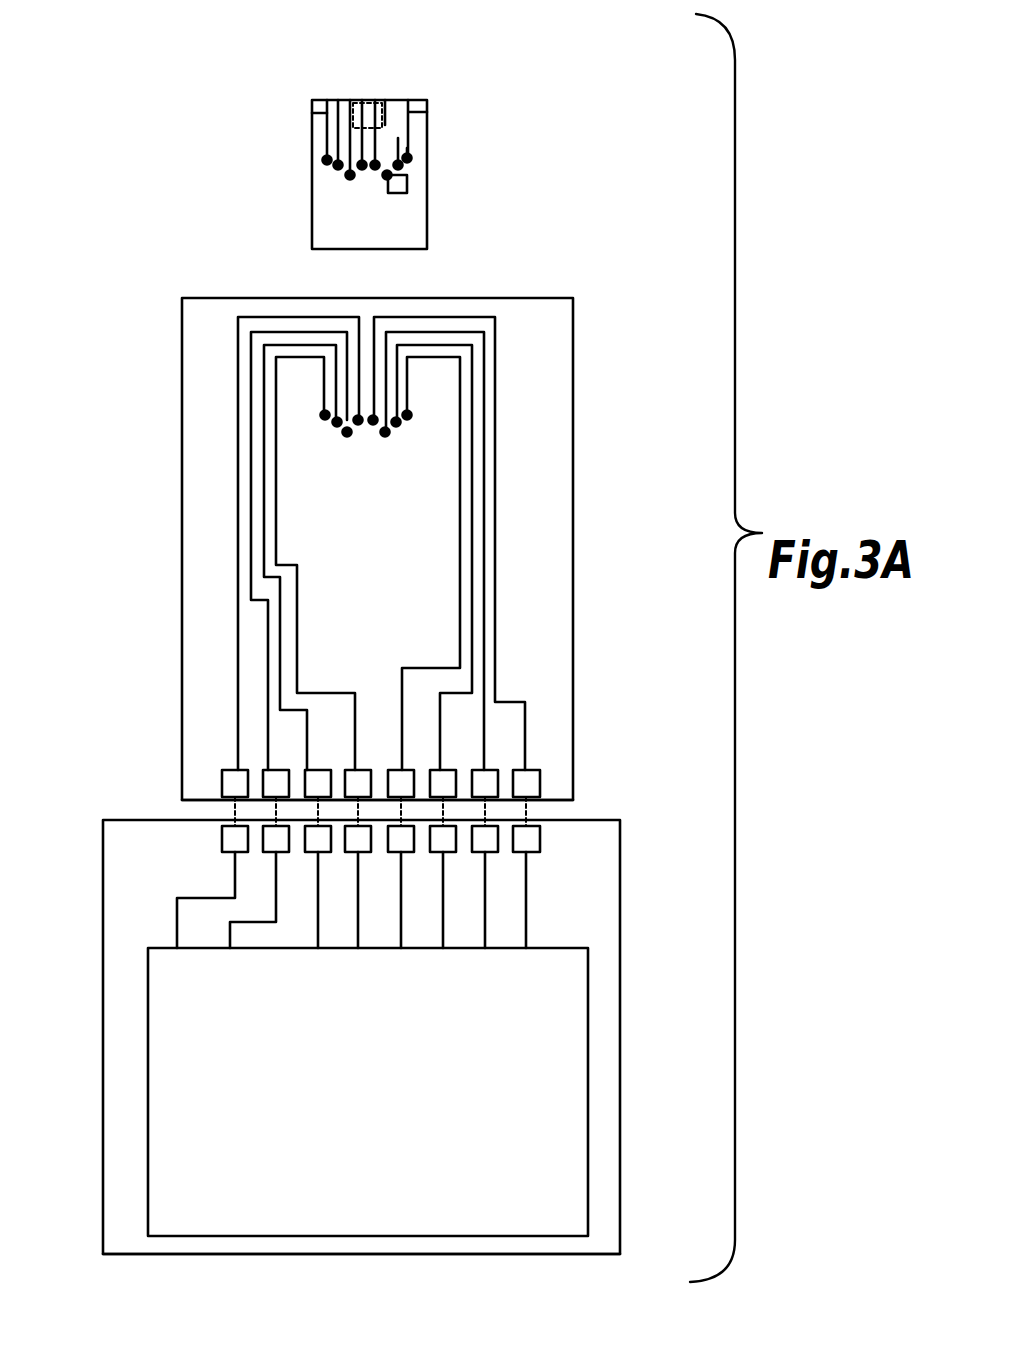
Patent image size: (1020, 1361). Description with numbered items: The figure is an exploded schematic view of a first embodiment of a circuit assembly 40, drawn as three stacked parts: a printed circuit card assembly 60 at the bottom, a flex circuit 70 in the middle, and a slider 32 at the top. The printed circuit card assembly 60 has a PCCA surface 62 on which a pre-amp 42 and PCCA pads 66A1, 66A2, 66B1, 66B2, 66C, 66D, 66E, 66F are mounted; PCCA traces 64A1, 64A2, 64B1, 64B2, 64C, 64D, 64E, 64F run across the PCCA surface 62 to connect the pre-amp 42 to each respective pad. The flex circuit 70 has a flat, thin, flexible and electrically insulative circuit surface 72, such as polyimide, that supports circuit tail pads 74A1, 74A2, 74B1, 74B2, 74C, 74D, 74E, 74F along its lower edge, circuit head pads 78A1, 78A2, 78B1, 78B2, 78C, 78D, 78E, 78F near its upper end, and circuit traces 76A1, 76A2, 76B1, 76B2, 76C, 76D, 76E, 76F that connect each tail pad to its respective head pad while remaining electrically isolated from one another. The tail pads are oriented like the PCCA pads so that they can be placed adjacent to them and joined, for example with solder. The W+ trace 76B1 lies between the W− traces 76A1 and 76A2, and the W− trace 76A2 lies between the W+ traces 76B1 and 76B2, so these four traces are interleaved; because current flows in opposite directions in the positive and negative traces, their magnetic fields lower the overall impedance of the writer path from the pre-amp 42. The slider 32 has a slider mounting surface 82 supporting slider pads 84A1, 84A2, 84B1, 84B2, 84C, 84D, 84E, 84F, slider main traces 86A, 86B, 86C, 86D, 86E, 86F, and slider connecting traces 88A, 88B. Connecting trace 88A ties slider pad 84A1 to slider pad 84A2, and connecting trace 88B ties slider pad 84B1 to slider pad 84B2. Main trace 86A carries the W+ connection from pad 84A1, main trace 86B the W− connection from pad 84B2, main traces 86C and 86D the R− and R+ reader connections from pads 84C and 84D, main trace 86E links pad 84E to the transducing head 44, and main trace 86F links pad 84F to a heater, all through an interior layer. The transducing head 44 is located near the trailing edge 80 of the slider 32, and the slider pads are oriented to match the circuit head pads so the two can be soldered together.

The circuit assembly 40 is at (186, 282).
The slider 32 is at (308, 252).
The slider mounting surface 82 is at (369, 168).
The transducing head 44 is at (351, 100).
The trailing edge 80 is at (380, 118).
The slider main trace 86A is at (388, 150).
The slider main trace 86B is at (399, 153).
The slider main trace 86C is at (322, 113).
The slider main trace 86D is at (338, 100).
The slider main trace 86E is at (349, 100).
The slider main trace 86F is at (362, 100).
The slider connecting trace 88A is at (404, 150).
The slider connecting trace 88B is at (404, 193).
The slider pad 84A1 is at (375, 165).
The slider pad 84A2 is at (398, 165).
The slider pad 84B1 is at (387, 175).
The slider pad 84B2 is at (407, 158).
The slider pad 84C is at (327, 160).
The slider pad 84D is at (338, 165).
The slider pad 84E is at (350, 175).
The slider pad 84F is at (362, 165).
The flex circuit 70 is at (178, 563).
The circuit surface 72 is at (377, 688).
The circuit head pad 78A1 is at (373, 420).
The circuit head pad 78A2 is at (396, 421).
The circuit head pad 78B1 is at (385, 432).
The circuit head pad 78B2 is at (407, 415).
The circuit head pad 78C is at (325, 413).
The circuit head pad 78D is at (337, 422).
The circuit head pad 78E is at (347, 432).
The circuit head pad 78F is at (358, 420).
The circuit trace 76A1 is at (497, 625).
The circuit trace 76A2 is at (472, 545).
The circuit trace 76B1 is at (484, 593).
The circuit trace 76B2 is at (462, 512).
The circuit trace 76C is at (297, 622).
The circuit trace 76D is at (280, 648).
The circuit trace 76E is at (268, 668).
The circuit trace 76F is at (238, 683).
The circuit tail pad 74A1 is at (540, 780).
The circuit tail pad 74A2 is at (454, 770).
The circuit tail pad 74B1 is at (496, 770).
The circuit tail pad 74B2 is at (411, 770).
The circuit tail pad 74C is at (351, 770).
The circuit tail pad 74D is at (309, 770).
The circuit tail pad 74E is at (266, 770).
The circuit tail pad 74F is at (222, 783).
The PCCA surface 62 is at (361, 1037).
The printed circuit card assembly 60 is at (240, 1258).
The pre-amp 42 is at (368, 1092).
The PCCA pad 66A1 is at (541, 838).
The PCCA pad 66A2 is at (455, 853).
The PCCA pad 66B1 is at (495, 853).
The PCCA pad 66B2 is at (412, 853).
The PCCA pad 66C is at (348, 853).
The PCCA pad 66D is at (308, 853).
The PCCA pad 66E is at (268, 853).
The PCCA pad 66F is at (222, 838).
The PCCA trace 64A1 is at (526, 935).
The PCCA trace 64A2 is at (443, 935).
The PCCA trace 64B1 is at (485, 935).
The PCCA trace 64B2 is at (401, 935).
The PCCA trace 64C is at (358, 935).
The PCCA trace 64D is at (318, 935).
The PCCA trace 64E is at (230, 935).
The PCCA trace 64F is at (177, 935).